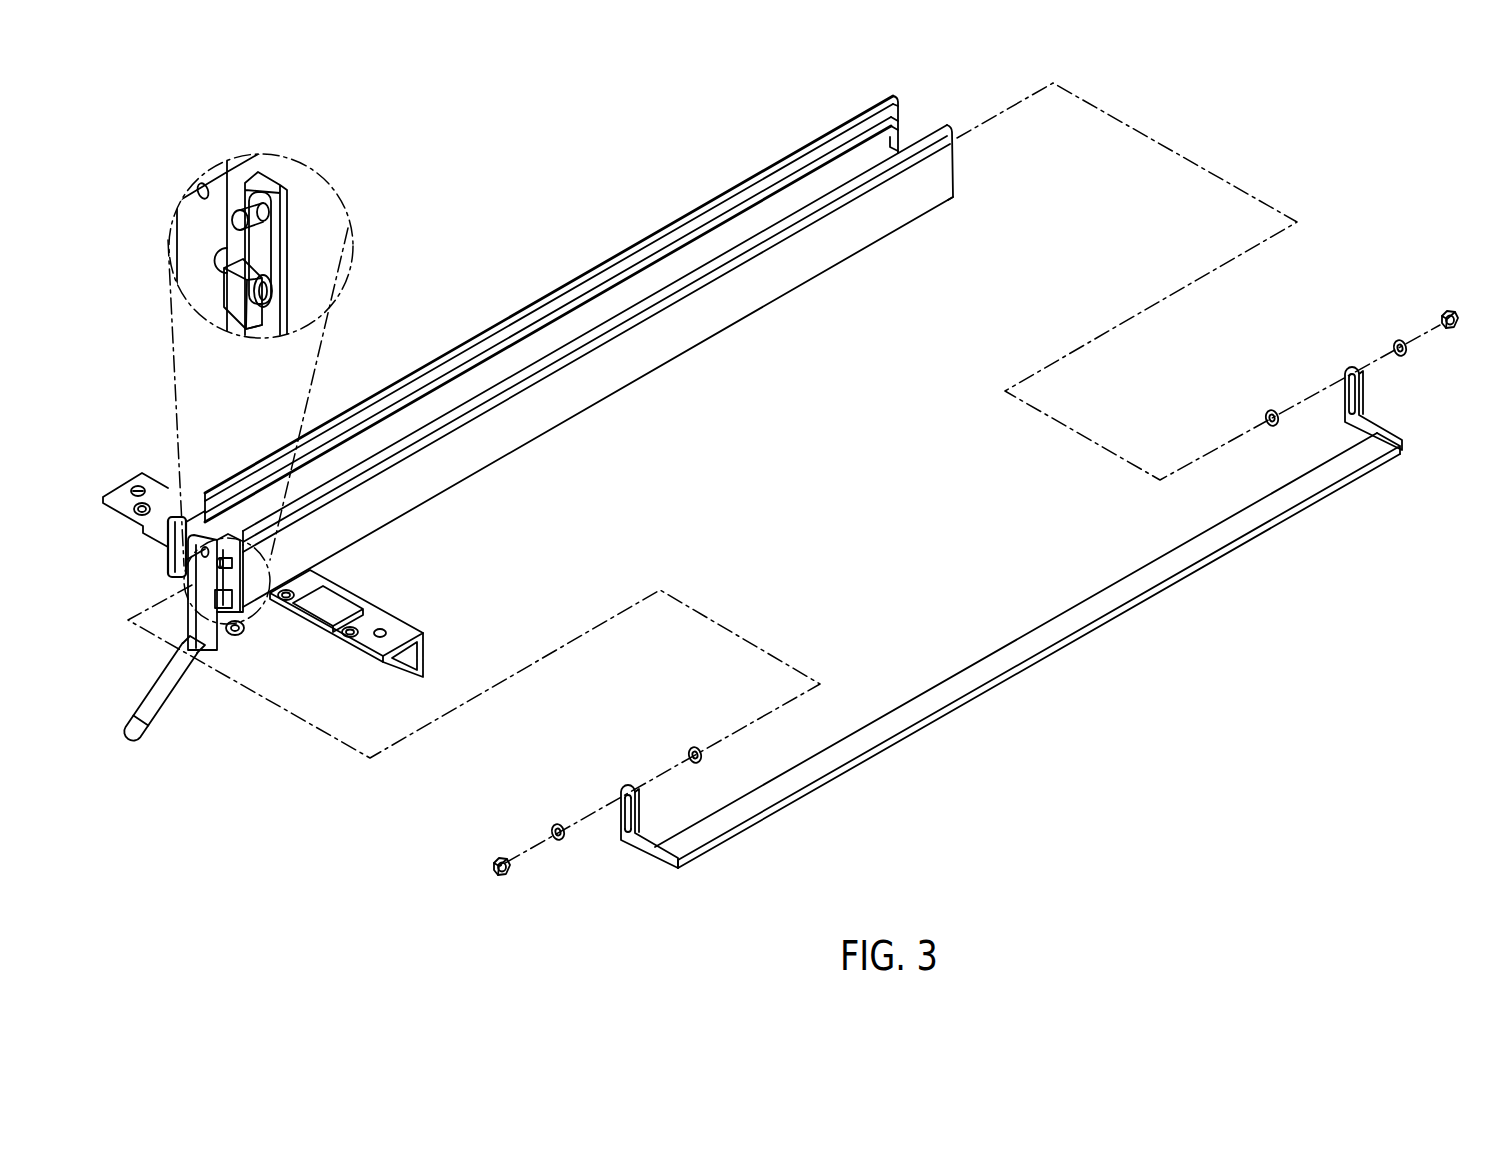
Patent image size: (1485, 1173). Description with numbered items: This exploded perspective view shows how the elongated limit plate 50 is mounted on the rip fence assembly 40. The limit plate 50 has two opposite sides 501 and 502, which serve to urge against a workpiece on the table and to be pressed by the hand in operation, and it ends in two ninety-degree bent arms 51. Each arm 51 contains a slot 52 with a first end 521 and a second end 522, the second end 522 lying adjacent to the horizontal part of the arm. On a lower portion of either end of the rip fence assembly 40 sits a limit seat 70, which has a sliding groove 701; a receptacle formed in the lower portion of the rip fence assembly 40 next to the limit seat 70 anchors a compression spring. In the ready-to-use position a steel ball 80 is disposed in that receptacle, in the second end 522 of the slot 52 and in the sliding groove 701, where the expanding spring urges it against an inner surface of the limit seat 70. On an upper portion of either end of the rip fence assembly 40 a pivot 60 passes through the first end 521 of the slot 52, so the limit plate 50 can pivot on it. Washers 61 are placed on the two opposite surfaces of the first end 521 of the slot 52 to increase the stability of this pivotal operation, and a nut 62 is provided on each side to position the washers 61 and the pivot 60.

The rip fence assembly 40 is at (750, 192).
The limit plate 50 is at (1018, 652).
The side of limit plate 501 is at (1097, 620).
The side of limit plate 502 is at (1048, 623).
The bent arm 51 is at (642, 845).
The slot 52 is at (620, 818).
The first end of slot 521 is at (628, 787).
The second end of slot 522 is at (623, 842).
The pivot 60 is at (257, 222).
The washer 61 is at (553, 827).
The nut 62 is at (495, 860).
The limit seat 70 is at (237, 298).
The sliding groove 701 is at (277, 315).
The steel ball 80 is at (264, 290).